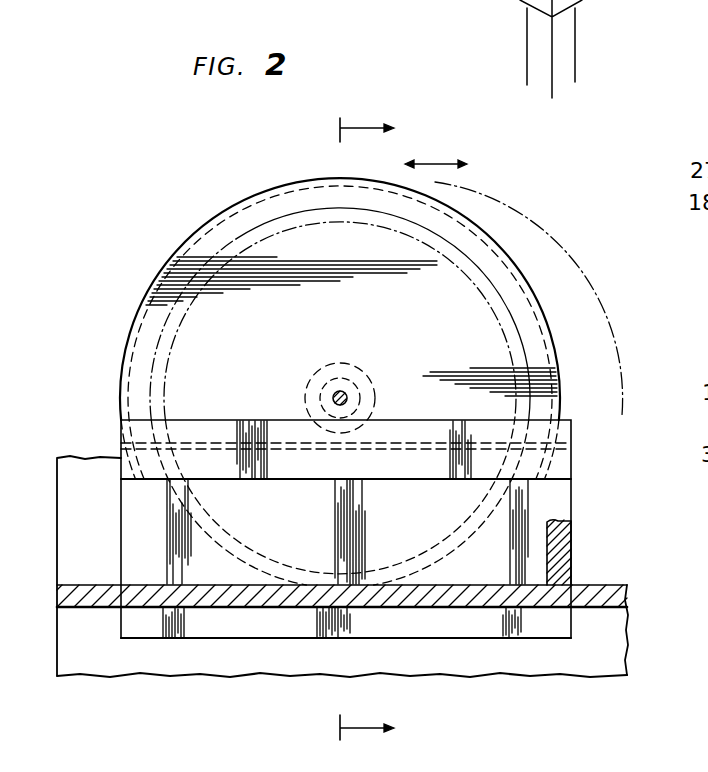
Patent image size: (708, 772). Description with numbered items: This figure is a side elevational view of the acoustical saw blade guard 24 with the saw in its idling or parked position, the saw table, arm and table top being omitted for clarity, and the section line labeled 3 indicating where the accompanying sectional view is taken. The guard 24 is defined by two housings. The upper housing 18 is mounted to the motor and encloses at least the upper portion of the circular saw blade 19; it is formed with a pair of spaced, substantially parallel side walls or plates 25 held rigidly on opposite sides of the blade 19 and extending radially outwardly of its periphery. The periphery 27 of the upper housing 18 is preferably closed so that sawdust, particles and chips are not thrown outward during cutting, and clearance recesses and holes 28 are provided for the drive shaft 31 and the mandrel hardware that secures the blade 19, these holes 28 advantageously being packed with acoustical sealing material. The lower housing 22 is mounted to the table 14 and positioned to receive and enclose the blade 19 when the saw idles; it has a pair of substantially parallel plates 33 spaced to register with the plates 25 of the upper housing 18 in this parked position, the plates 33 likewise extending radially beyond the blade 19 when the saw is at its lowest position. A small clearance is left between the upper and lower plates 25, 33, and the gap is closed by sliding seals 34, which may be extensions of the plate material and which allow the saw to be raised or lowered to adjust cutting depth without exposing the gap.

The section line 3- 3 is at (382, 429).
The table 14 is at (603, 588).
The upper housing 18 is at (209, 211).
The circular saw blade 19 is at (172, 342).
The lower housing 22 is at (598, 533).
The acoustical saw blade guard 24 is at (541, 262).
The side walls or plates 25 is at (206, 248).
The periphery 27 is at (272, 188).
The clearance recesses and holes 28 is at (333, 398).
The drive shaft 31 is at (348, 396).
The side walls or plates 33 is at (488, 628).
The sliding seals 34 is at (142, 458).